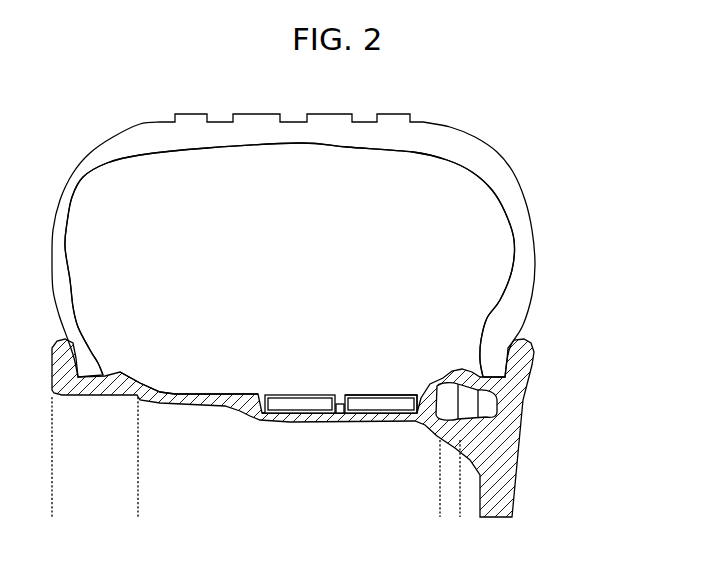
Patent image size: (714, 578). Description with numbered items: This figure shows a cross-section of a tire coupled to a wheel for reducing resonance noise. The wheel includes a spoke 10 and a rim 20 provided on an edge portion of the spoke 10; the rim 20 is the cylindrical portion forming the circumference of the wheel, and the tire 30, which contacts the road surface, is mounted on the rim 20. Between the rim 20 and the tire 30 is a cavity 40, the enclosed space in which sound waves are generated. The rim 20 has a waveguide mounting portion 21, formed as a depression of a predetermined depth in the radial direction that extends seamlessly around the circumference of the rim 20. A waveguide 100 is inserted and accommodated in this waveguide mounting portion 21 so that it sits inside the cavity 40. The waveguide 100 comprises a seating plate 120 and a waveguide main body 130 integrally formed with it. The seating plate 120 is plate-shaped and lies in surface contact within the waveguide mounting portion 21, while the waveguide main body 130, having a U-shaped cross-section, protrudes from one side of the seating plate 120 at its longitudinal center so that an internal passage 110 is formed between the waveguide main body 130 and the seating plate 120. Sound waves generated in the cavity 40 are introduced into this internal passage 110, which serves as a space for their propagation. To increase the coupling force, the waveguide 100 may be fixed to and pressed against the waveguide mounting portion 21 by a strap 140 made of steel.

The spoke 10 is at (521, 478).
The rim 20 is at (200, 393).
The waveguide mounting portion 21 is at (280, 414).
The tire 30 is at (527, 192).
The cavity 40 is at (427, 215).
The waveguide 100 is at (333, 404).
The internal passage 110 is at (312, 414).
The seating plate 120 is at (377, 414).
The waveguide main body 130 is at (378, 395).
The strap 140 is at (343, 396).